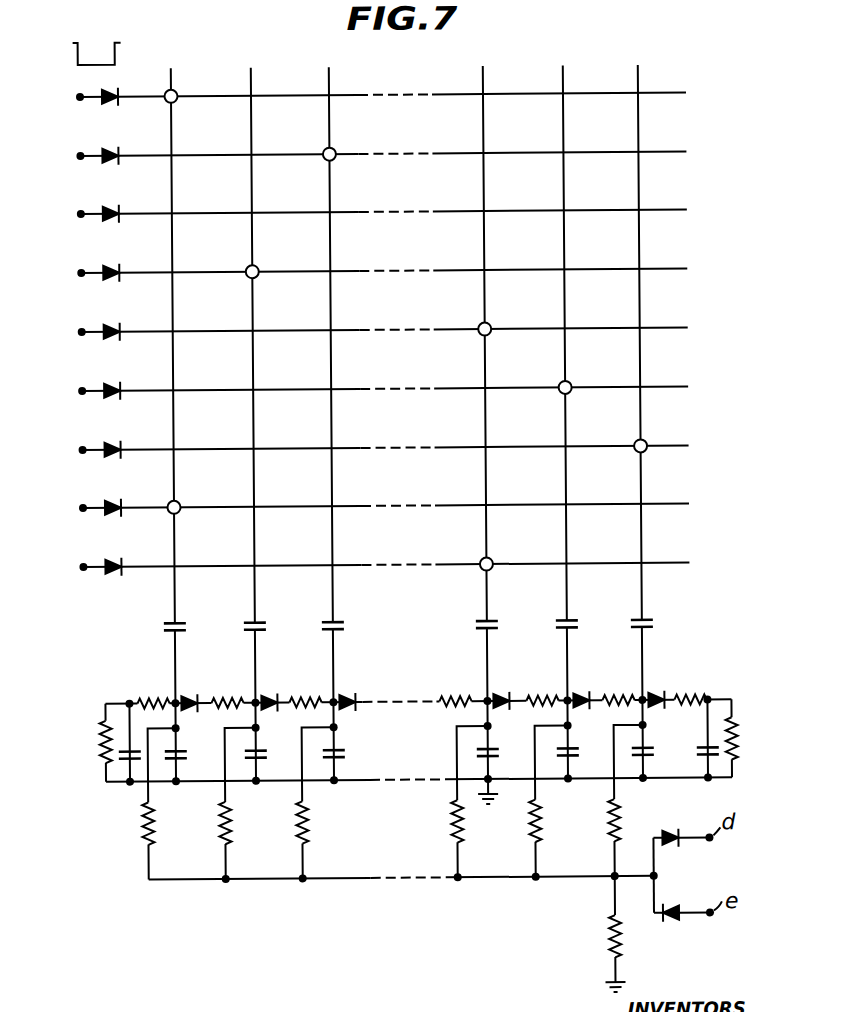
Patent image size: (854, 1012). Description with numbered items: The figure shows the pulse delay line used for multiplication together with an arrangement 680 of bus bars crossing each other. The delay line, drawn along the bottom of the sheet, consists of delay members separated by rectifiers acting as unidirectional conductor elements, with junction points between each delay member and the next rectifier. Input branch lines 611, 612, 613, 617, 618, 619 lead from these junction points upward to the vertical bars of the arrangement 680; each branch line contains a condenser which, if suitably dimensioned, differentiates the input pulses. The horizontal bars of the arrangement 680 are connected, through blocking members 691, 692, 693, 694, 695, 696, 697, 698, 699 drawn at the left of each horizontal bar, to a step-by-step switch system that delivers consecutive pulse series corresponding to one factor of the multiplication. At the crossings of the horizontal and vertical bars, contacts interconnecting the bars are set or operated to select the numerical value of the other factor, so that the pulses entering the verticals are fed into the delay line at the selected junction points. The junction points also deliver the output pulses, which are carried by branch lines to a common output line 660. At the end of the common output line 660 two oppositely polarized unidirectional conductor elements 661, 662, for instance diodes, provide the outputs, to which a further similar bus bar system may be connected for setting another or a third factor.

The arrangement of bus bars crossing each other 680 is at (295, 121).
The blocking member 691 is at (111, 105).
The blocking member 692 is at (111, 164).
The blocking member 693 is at (111, 222).
The blocking member 694 is at (111, 281).
The blocking member 695 is at (111, 340).
The blocking member 696 is at (111, 399).
The blocking member 697 is at (111, 458).
The blocking member 698 is at (111, 516).
The blocking member 699 is at (111, 575).
The branch line 611 is at (172, 654).
The branch line 612 is at (252, 654).
The branch line 613 is at (330, 654).
The branch line 617 is at (484, 654).
The branch line 618 is at (564, 654).
The branch line 619 is at (639, 654).
The common output line 660 is at (480, 883).
The unidirectional conductor element 661 is at (663, 834).
The unidirectional conductor element 662 is at (662, 926).